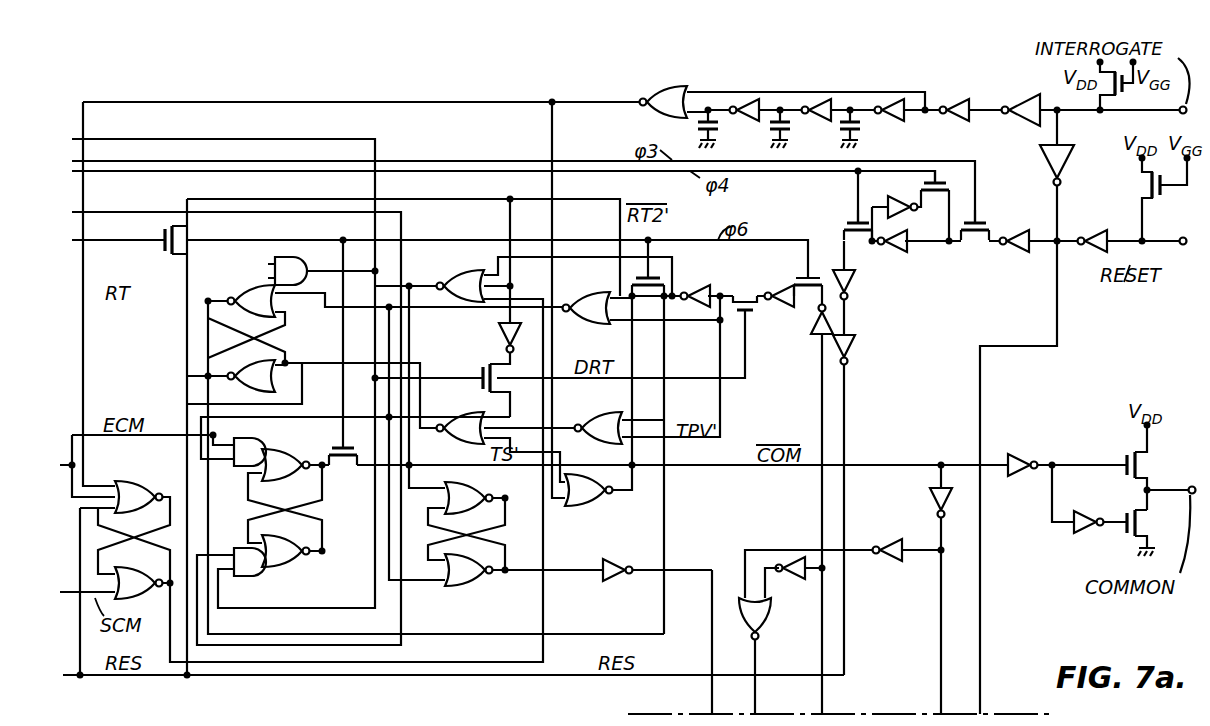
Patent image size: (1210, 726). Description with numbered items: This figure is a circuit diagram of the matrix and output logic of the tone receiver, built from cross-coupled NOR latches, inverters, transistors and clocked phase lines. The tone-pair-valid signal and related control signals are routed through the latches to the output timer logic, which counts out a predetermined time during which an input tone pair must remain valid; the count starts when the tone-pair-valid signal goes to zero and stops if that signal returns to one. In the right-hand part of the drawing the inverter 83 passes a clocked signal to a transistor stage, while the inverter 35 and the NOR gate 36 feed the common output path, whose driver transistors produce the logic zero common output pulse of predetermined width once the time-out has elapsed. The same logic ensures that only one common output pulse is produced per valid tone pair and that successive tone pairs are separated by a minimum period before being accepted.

The inverter 83 is at (780, 292).
The inverter 35 is at (790, 580).
The NOR gate 36 is at (745, 625).